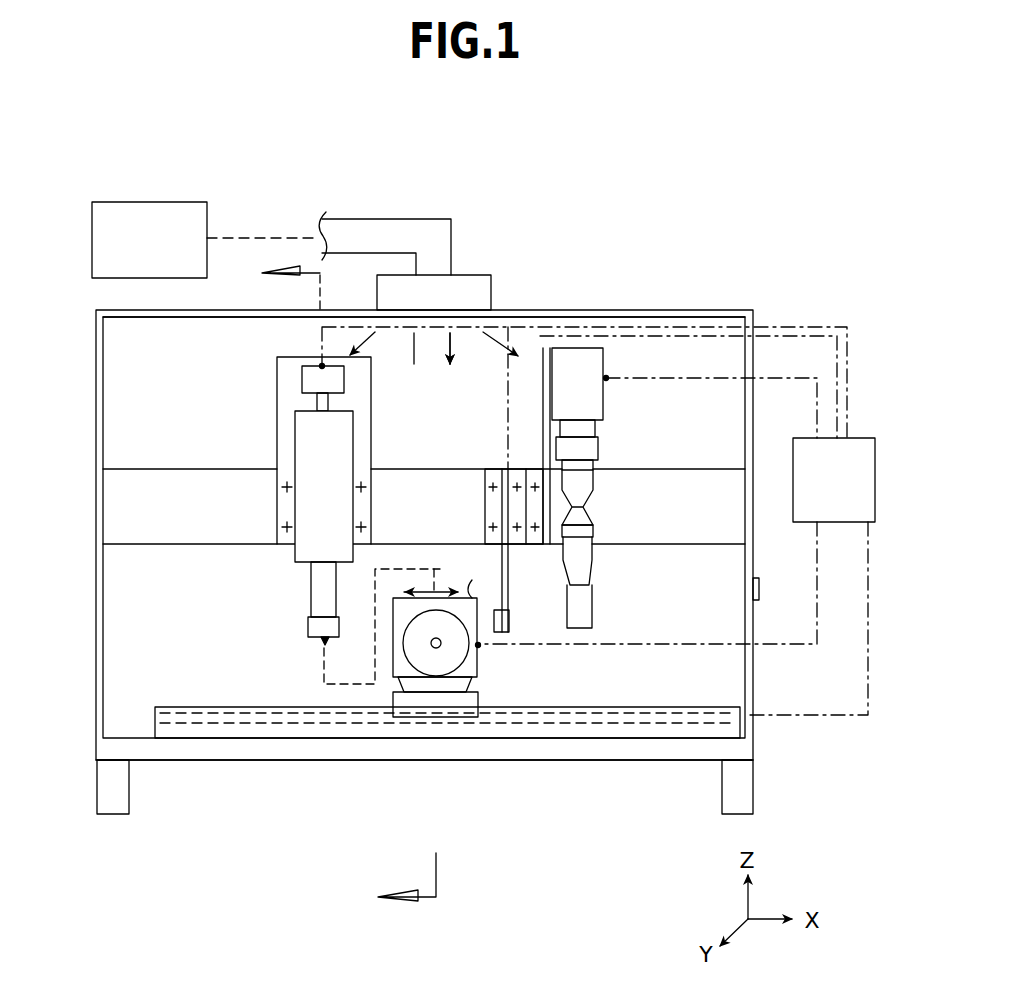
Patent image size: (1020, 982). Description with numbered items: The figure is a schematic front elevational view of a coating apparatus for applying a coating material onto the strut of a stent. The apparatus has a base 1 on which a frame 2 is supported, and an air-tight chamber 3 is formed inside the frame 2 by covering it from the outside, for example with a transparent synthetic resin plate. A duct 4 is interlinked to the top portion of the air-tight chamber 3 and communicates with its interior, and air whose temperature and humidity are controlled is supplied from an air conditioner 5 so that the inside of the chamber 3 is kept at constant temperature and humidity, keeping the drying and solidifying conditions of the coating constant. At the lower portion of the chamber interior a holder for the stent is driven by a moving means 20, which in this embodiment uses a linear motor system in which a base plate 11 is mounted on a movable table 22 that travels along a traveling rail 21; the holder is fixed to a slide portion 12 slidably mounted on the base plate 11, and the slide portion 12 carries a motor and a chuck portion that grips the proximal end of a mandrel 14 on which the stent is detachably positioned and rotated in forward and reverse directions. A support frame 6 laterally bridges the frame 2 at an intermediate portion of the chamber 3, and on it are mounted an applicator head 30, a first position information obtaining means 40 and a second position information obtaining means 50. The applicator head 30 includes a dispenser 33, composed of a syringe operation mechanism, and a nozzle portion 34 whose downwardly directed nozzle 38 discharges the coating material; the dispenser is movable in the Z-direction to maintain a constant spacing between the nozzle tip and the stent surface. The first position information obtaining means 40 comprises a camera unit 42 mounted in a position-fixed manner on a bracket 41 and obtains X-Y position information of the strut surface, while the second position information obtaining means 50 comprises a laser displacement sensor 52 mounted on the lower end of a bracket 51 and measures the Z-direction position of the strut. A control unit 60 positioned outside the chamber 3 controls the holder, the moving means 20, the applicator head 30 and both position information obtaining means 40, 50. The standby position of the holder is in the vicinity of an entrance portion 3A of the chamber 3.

The base 1 is at (232, 748).
The frame 2 is at (100, 524).
The air-tight chamber 3 is at (120, 426).
The entrance portion 3A is at (752, 618).
The duct 4 is at (386, 219).
The air conditioner 5 is at (172, 203).
The support frame 6 is at (177, 483).
The base plate 11 is at (398, 682).
The slide portion 12 is at (446, 688).
The mandrel 14 is at (441, 645).
The moving means 20 is at (450, 691).
The traveling rail 21 is at (666, 727).
The movable table 22 is at (408, 722).
The applicator head 30 is at (267, 528).
The dispenser 33 is at (306, 560).
The nozzle portion 34 is at (308, 628).
The nozzle 38 is at (322, 645).
The first position information obtaining means 40 is at (573, 488).
The bracket 41 is at (543, 436).
The camera unit 42 is at (590, 497).
The second position information obtaining means 50 is at (490, 524).
The bracket 51 is at (505, 590).
The laser displacement sensor 52 is at (509, 619).
The control unit 60 is at (598, 521).